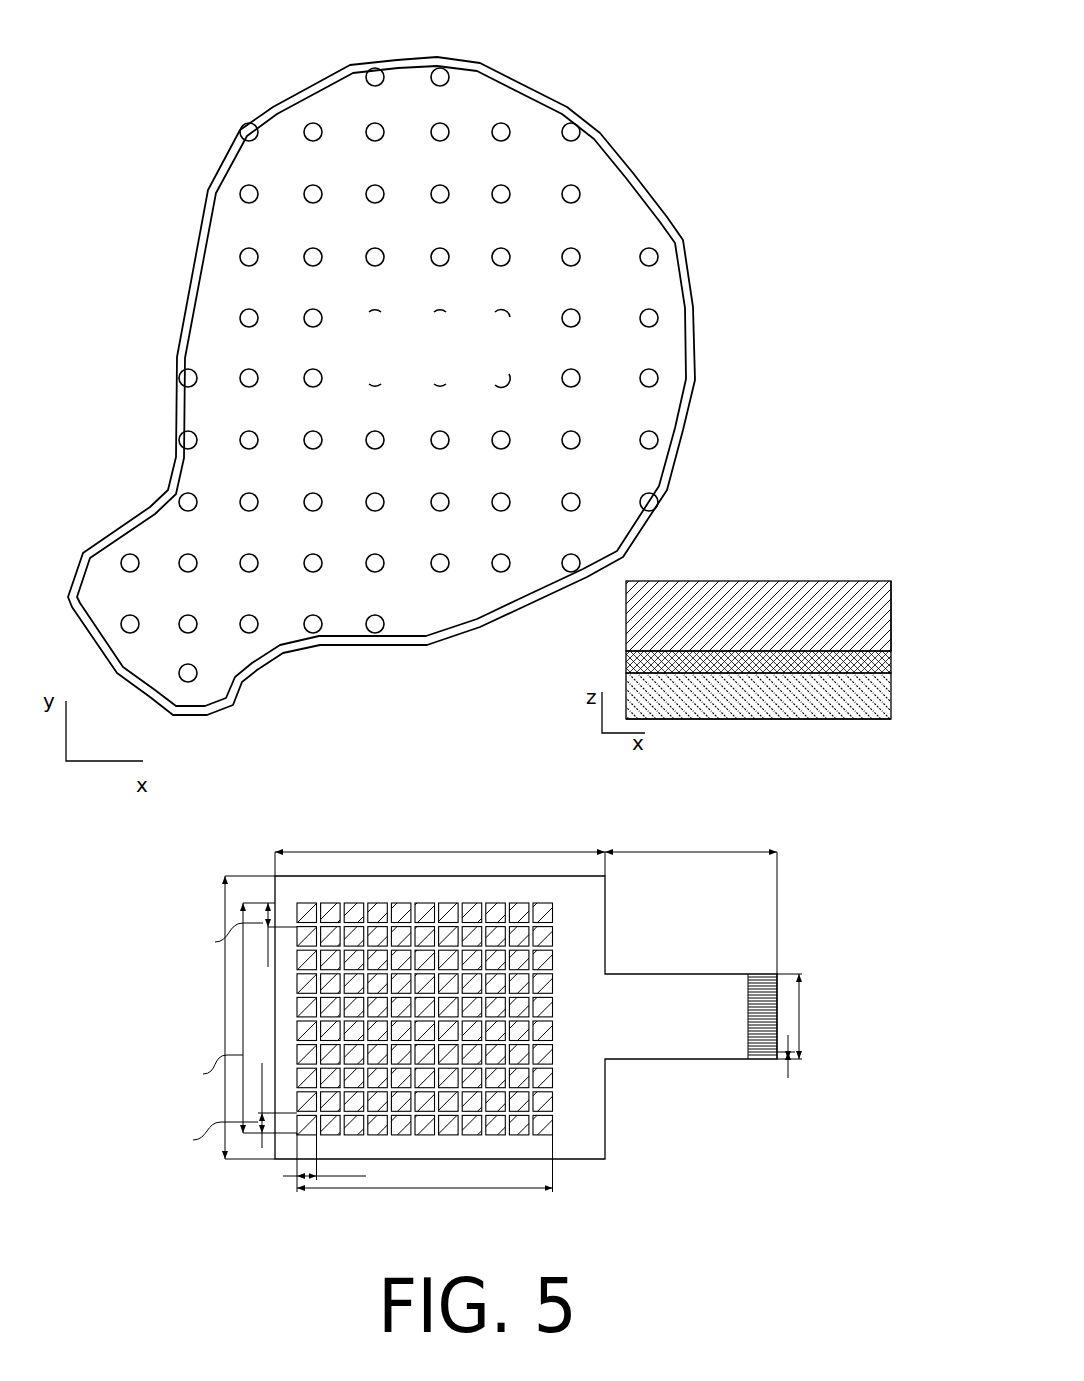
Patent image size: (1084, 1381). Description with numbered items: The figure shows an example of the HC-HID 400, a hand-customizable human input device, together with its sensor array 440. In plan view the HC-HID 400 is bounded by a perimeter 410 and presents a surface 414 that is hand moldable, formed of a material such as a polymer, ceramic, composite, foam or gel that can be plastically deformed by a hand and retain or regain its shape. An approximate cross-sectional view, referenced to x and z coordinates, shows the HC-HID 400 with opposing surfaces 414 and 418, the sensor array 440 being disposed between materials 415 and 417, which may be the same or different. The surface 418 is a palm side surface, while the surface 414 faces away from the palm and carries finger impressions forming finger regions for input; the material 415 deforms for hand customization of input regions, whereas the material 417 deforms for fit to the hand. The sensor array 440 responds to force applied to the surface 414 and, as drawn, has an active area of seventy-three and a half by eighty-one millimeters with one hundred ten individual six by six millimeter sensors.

The HC-HID 400 is at (552, 33).
The perimeter 410 is at (633, 160).
The surface 414 is at (797, 581).
The material 415 is at (891, 611).
The material 417 is at (891, 699).
The surface 418 is at (807, 719).
The sensor array 440 is at (891, 662).